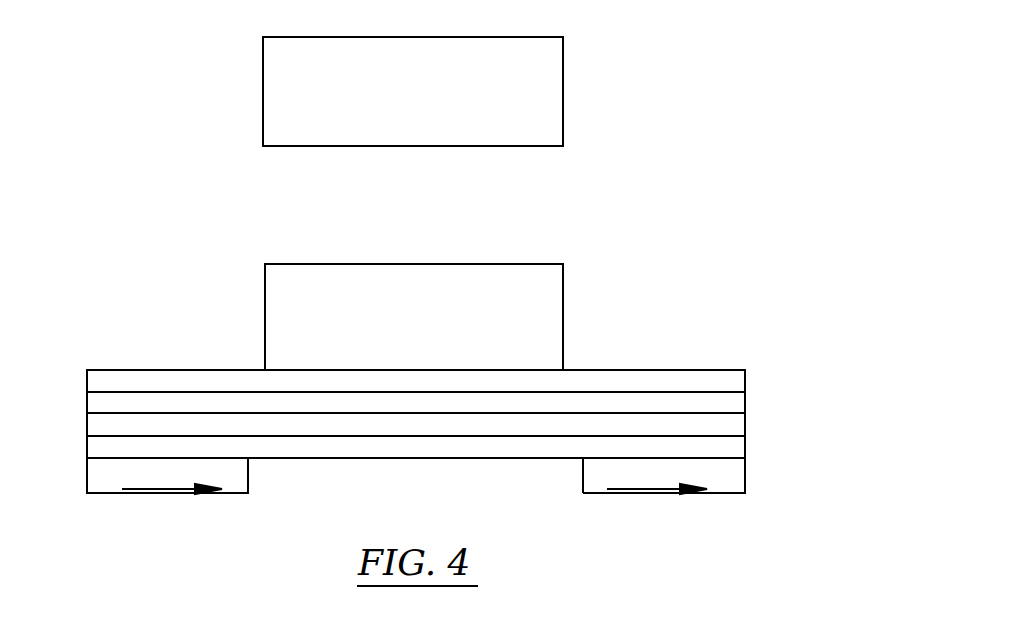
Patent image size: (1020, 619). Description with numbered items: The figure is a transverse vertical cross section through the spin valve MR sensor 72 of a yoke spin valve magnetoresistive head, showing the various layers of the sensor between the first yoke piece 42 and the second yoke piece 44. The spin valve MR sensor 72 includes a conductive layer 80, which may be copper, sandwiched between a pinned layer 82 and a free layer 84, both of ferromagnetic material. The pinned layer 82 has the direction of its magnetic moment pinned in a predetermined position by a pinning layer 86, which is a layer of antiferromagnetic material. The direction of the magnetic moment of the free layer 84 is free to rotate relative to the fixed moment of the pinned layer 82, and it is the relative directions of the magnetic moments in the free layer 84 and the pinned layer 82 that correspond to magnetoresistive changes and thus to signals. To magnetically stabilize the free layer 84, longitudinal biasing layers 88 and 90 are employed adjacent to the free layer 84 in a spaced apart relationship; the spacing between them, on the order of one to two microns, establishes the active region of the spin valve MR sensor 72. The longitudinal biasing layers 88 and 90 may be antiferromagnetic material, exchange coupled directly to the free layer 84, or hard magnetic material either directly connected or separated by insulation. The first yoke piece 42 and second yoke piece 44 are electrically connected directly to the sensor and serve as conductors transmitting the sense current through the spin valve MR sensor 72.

The second yoke piece 44 is at (536, 81).
The first yoke piece 42 is at (279, 315).
The spin valve MR sensor 72 is at (82, 375).
The pinning layer 86 is at (737, 380).
The pinned layer 82 is at (737, 405).
The conductive layer 80 is at (737, 425).
The free layer 84 is at (737, 447).
The longitudinal biasing layer 88 is at (148, 488).
The longitudinal biasing layer 90 is at (722, 482).